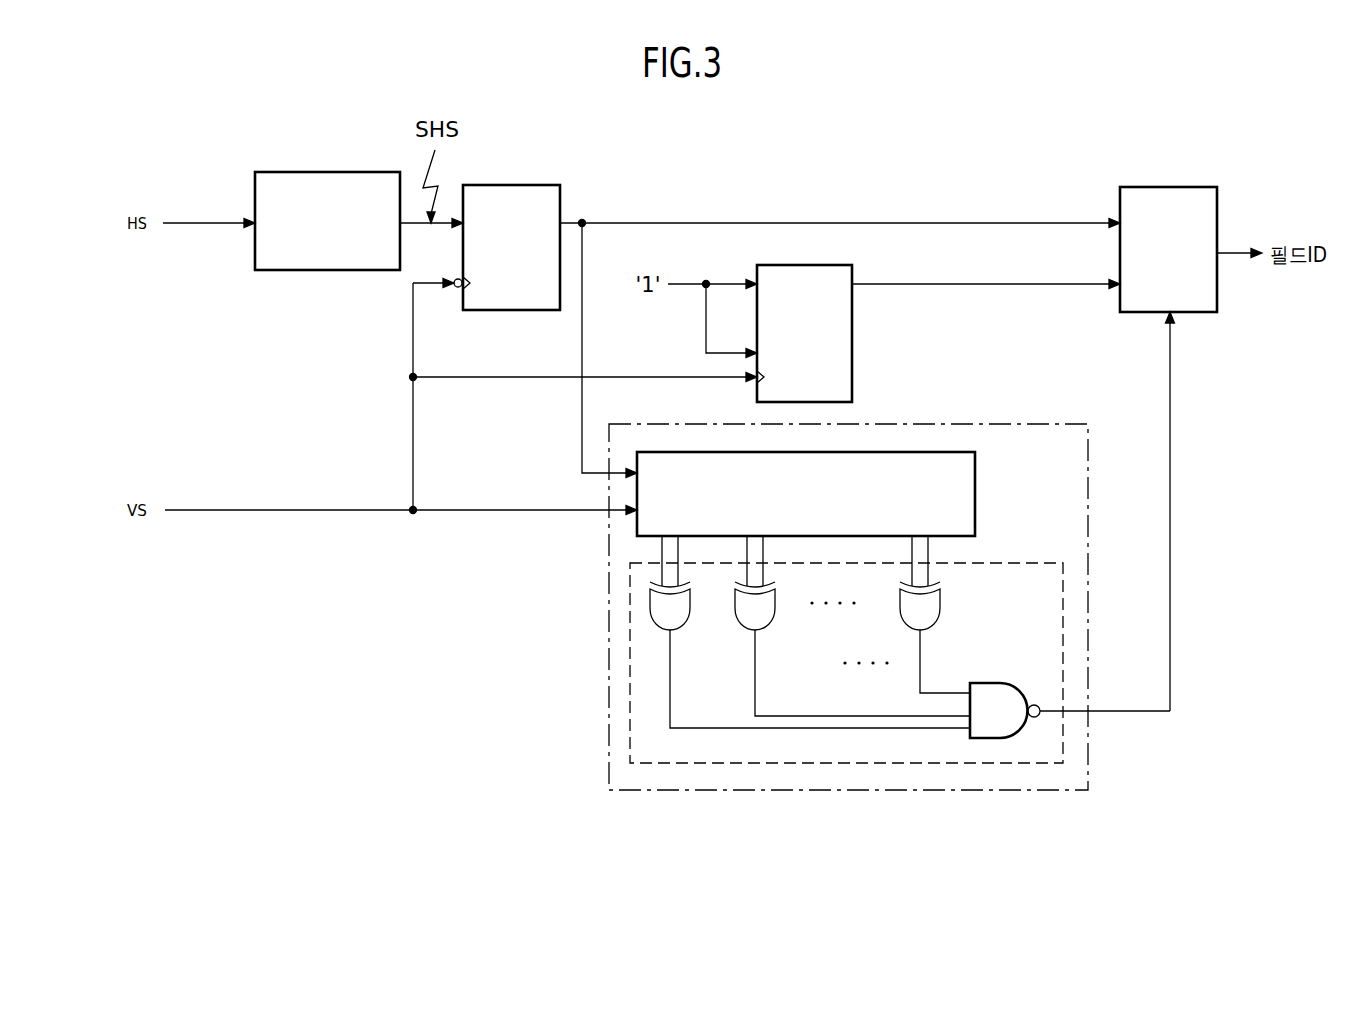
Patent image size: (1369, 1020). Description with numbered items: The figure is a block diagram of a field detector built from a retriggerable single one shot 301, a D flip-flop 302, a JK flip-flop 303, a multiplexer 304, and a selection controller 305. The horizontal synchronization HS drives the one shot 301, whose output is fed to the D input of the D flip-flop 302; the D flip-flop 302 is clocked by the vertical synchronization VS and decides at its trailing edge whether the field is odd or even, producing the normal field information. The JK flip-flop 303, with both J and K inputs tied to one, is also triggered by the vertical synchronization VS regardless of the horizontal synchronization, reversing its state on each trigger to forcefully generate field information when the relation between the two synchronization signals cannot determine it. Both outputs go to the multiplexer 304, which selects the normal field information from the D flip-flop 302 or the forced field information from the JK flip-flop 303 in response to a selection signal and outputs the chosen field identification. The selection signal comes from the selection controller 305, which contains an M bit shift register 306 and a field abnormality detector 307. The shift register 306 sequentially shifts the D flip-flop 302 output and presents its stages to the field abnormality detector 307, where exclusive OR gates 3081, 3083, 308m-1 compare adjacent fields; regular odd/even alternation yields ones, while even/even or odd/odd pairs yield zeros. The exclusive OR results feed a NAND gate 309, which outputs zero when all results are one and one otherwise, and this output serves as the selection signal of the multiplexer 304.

The retriggerable single one shot 301 is at (330, 172).
The D flip-flop 302 is at (516, 185).
The JK flip-flop 303 is at (800, 265).
The multiplexer 304 is at (1157, 187).
The selection controller 305 is at (745, 793).
The M bit shift register 306 is at (975, 500).
The field abnormality detector 307 is at (1065, 746).
The exclusive OR gate 3081 is at (686, 618).
The exclusive OR gate 3083 is at (771, 618).
The exclusive OR gate 308m-1 is at (936, 618).
The NAND gate 309 is at (1022, 683).